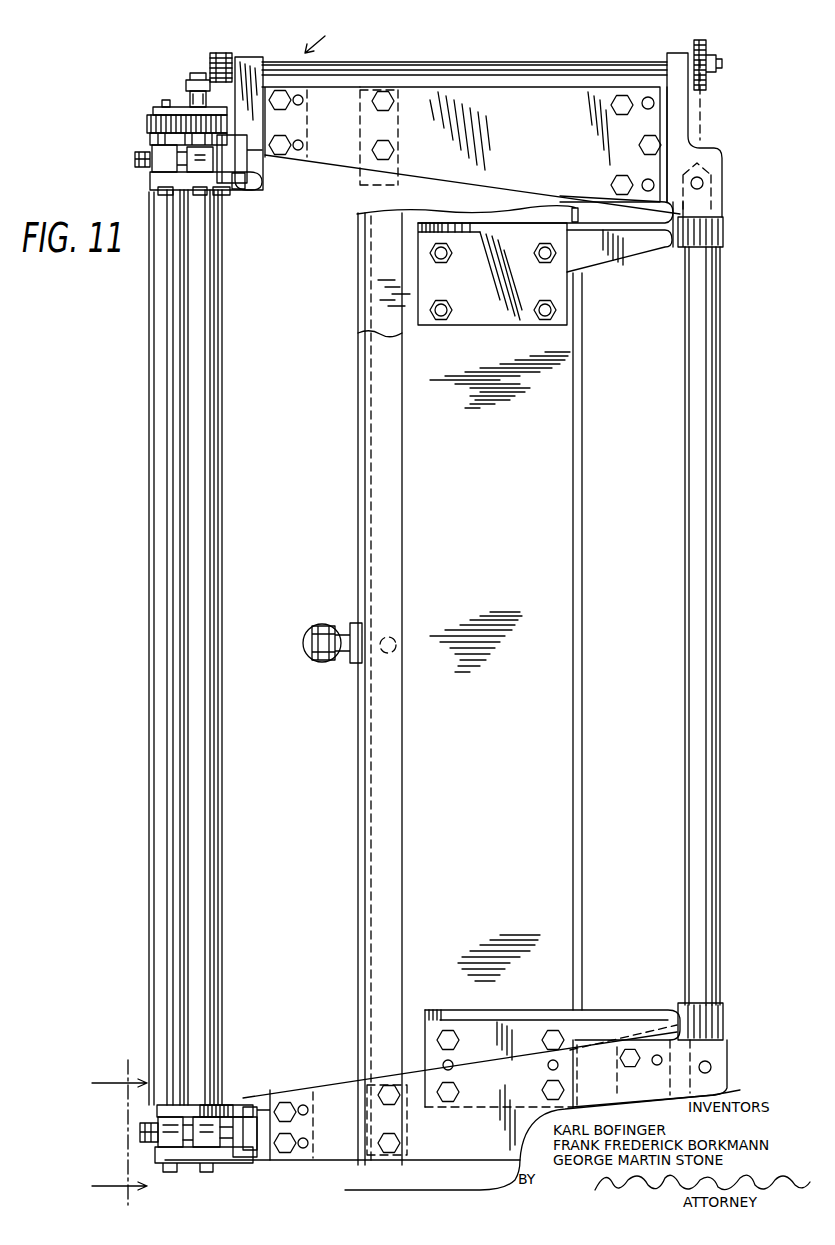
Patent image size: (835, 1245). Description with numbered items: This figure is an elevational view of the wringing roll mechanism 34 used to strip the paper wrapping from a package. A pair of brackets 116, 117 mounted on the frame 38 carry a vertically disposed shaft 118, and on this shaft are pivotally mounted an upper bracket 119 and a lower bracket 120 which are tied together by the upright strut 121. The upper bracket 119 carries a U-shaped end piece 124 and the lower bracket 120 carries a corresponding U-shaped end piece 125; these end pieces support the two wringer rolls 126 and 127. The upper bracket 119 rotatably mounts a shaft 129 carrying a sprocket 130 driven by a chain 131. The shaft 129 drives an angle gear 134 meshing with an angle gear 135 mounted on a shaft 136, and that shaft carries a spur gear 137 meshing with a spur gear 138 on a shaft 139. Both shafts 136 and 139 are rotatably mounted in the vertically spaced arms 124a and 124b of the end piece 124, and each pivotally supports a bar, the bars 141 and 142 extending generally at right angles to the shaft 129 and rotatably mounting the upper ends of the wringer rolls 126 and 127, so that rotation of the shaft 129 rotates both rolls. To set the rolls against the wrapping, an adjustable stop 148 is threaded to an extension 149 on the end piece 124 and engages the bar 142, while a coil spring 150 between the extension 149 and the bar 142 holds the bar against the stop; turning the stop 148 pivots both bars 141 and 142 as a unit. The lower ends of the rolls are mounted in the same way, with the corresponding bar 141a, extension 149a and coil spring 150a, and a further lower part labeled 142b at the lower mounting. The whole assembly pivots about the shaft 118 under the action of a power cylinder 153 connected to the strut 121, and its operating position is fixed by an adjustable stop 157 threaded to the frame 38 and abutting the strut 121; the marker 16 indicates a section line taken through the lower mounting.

The wringing roll mechanism 34 is at (318, 33).
The frame 38 is at (568, 572).
The bracket 116 is at (613, 257).
The bracket 117 is at (637, 990).
The vertically disposed shaft 118 is at (688, 641).
The upper bracket 119 is at (545, 138).
The lower bracket 120 is at (347, 1088).
The strut 121 is at (370, 449).
The U-shaped end piece 124 is at (256, 128).
The arm 124a is at (153, 112).
The arm 124b is at (178, 180).
The U-shaped end piece 125 is at (260, 1098).
The wringer roll 126 is at (150, 510).
The wringer roll 127 is at (218, 431).
The shaft 129 is at (375, 58).
The sprocket 130 is at (699, 45).
The chain 131 is at (697, 110).
The angle gear 134 is at (222, 53).
The angle gear 135 is at (188, 86).
The shaft 136 is at (197, 73).
The spur gear 137 is at (248, 98).
The spur gear 138 is at (147, 125).
The shaft 139 is at (166, 100).
The bar 141 is at (135, 160).
The bar 141a is at (168, 1128).
The bar 142 is at (195, 168).
The lower slide block 142b is at (215, 1145).
The adjustable stop 148 is at (222, 195).
The extension 149 is at (256, 181).
The extension 149a is at (247, 1143).
The coil spring 150 is at (243, 180).
The coil spring 150a is at (233, 1107).
The power cylinder 153 is at (313, 628).
The adjustable stop 157 is at (398, 643).
The section line 16- 16 is at (106, 1132).